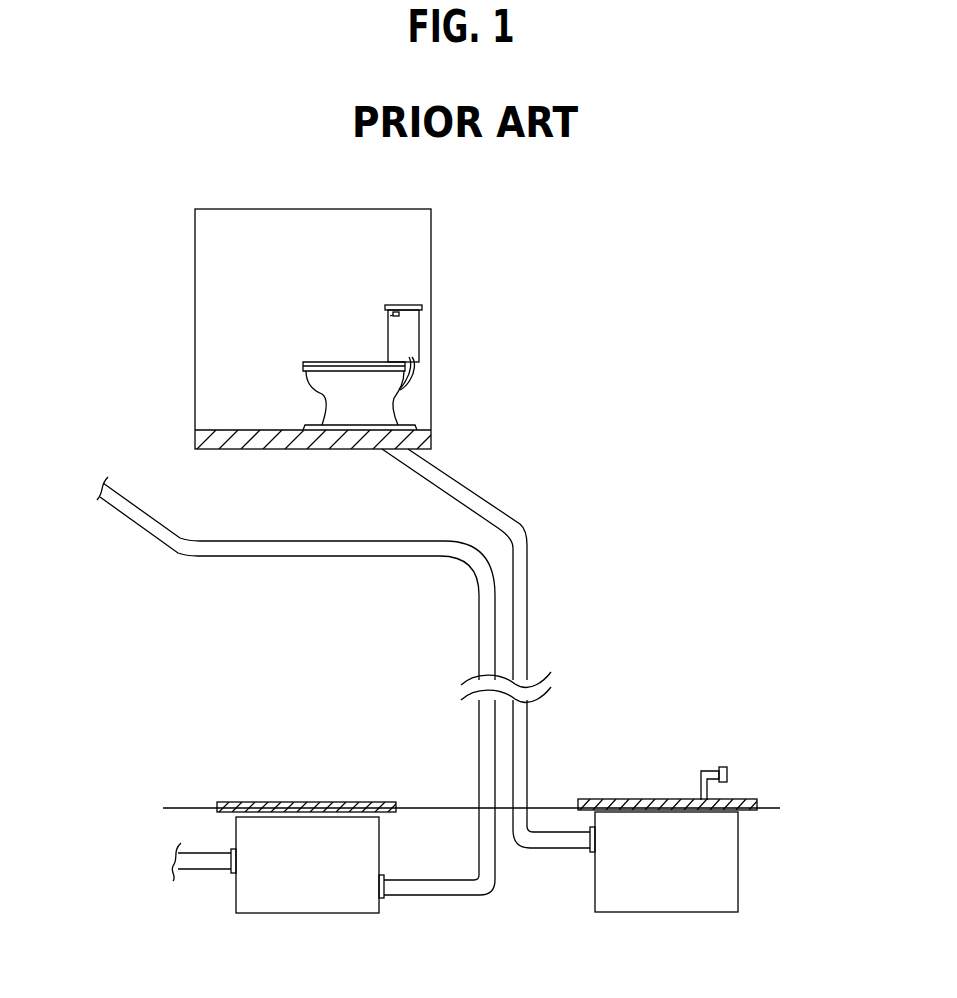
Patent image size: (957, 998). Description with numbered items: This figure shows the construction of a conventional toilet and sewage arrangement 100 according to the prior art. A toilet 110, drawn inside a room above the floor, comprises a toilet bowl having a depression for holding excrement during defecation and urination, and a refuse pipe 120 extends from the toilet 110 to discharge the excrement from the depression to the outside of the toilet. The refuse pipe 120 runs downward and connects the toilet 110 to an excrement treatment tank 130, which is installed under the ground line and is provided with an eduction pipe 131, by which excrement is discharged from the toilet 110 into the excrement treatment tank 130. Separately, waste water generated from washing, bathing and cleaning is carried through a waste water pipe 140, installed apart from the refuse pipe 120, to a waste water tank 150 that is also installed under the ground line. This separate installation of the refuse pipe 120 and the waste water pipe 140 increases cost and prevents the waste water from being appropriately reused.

The sewage collection and transfer system 100 is at (459, 594).
The toilet 110 is at (372, 401).
The refuse pipe 120 is at (518, 624).
The excrement treatment tank 130 is at (722, 866).
The eduction pipe 131 is at (707, 767).
The waste water pipe 140 is at (487, 660).
The waste water tank 150 is at (310, 905).